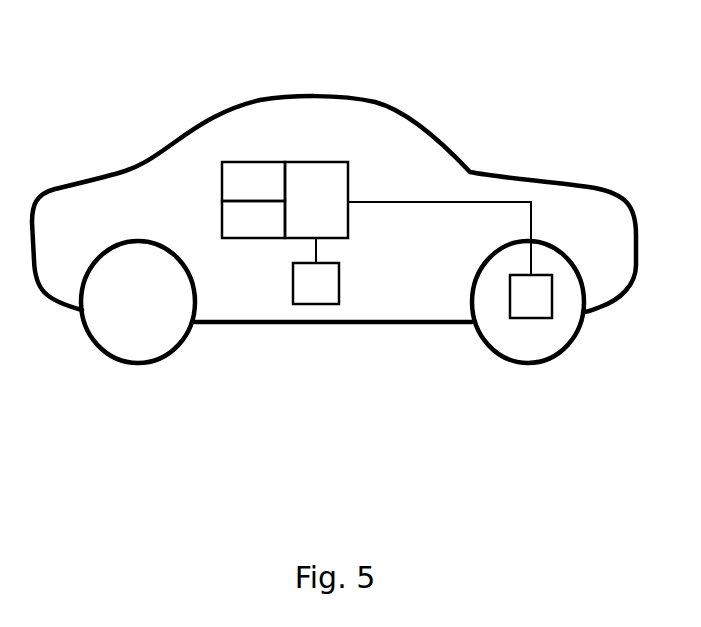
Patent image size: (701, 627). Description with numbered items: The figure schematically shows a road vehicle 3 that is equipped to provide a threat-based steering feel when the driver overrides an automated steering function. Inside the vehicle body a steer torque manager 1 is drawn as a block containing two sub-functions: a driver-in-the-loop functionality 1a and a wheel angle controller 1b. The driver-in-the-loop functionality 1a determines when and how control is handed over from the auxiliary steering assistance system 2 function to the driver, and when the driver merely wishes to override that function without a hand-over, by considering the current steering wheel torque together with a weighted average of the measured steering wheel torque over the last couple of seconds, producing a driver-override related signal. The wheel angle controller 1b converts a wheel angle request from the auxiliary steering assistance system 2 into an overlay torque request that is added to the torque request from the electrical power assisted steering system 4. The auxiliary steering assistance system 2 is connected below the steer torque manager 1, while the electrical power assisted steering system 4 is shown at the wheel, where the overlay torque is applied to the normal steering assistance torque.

The steer torque manager 1 is at (408, 218).
The driver-in-the-loop functionality 1a is at (253, 181).
The wheel angle controller 1b is at (253, 219).
The auxiliary steering assistance system 2 is at (316, 283).
The road vehicle 3 is at (386, 92).
The electrical power assisted steering system 4 is at (531, 296).